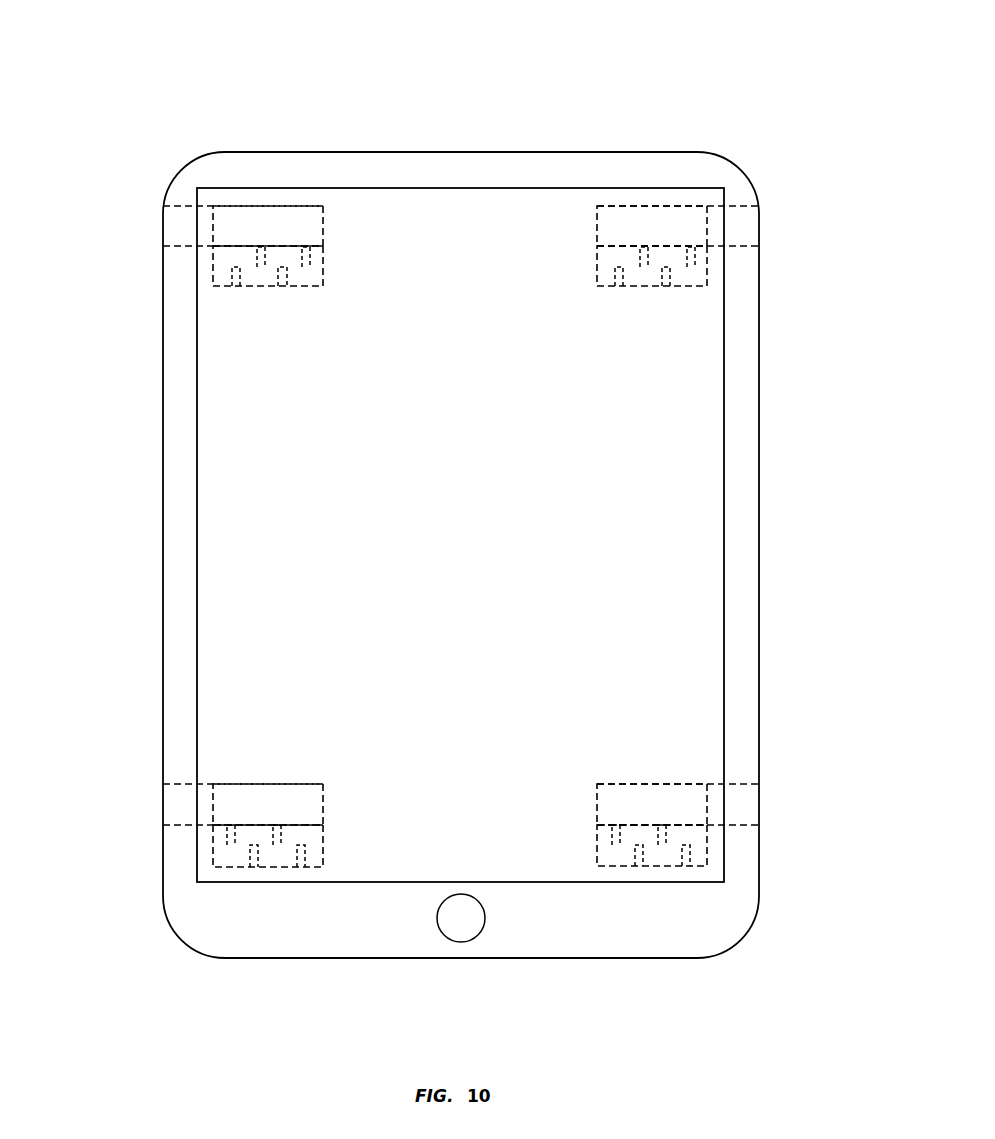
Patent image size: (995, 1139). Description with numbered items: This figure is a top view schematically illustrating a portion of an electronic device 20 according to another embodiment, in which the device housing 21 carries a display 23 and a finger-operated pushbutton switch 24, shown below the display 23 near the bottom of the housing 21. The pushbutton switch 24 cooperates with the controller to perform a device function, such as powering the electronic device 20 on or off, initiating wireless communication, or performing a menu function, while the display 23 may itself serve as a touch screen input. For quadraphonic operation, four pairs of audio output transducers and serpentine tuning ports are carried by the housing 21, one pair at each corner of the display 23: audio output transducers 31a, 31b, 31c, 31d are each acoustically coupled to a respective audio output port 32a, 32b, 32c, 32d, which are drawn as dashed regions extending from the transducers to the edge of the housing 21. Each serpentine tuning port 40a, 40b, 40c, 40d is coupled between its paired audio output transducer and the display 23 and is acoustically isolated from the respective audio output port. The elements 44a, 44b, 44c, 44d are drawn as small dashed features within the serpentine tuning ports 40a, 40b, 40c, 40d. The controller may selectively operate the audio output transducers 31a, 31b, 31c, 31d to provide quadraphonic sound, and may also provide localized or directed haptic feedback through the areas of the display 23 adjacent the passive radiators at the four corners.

The electronic device 20 is at (205, 55).
The device housing 21 is at (163, 560).
The display 23 is at (240, 456).
The pushbutton switch 24 is at (466, 926).
The audio output transducer 31a is at (269, 222).
The audio output transducer 31b is at (650, 217).
The audio output transducer 31c is at (258, 800).
The audio output transducer 31d is at (662, 795).
The audio output port 32a is at (177, 226).
The audio output port 32b is at (742, 220).
The audio output port 32c is at (173, 810).
The audio output port 32d is at (740, 812).
The serpentine tuning port 40a is at (255, 258).
The serpentine tuning port 40b is at (665, 283).
The serpentine tuning port 40c is at (228, 838).
The serpentine tuning port 40d is at (690, 857).
The first sensor electrodes 44a is at (318, 265).
The second sensor electrodes 44b is at (600, 268).
The third sensor electrodes 44c is at (313, 847).
The fourth sensor electrodes 44d is at (598, 845).